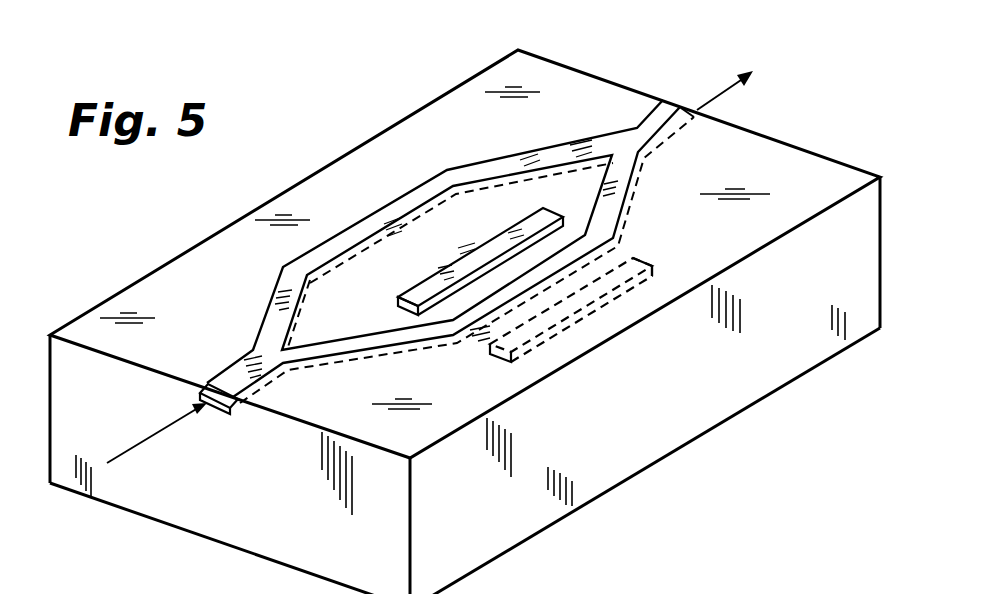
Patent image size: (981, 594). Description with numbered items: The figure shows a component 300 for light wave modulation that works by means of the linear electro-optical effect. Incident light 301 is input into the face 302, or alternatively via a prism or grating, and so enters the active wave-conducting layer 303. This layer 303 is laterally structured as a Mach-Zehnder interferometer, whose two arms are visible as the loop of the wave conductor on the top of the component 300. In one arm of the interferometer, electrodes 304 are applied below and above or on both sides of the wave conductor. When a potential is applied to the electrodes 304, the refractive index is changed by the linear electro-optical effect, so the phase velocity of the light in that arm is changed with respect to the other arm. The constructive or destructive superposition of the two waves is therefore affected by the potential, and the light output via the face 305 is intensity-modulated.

The component 300 is at (712, 469).
The incident light 301 is at (138, 446).
The face 302 is at (218, 402).
The active wave-conducting layer 303 is at (642, 118).
The electrodes 304 is at (463, 264).
The face 305 is at (703, 109).